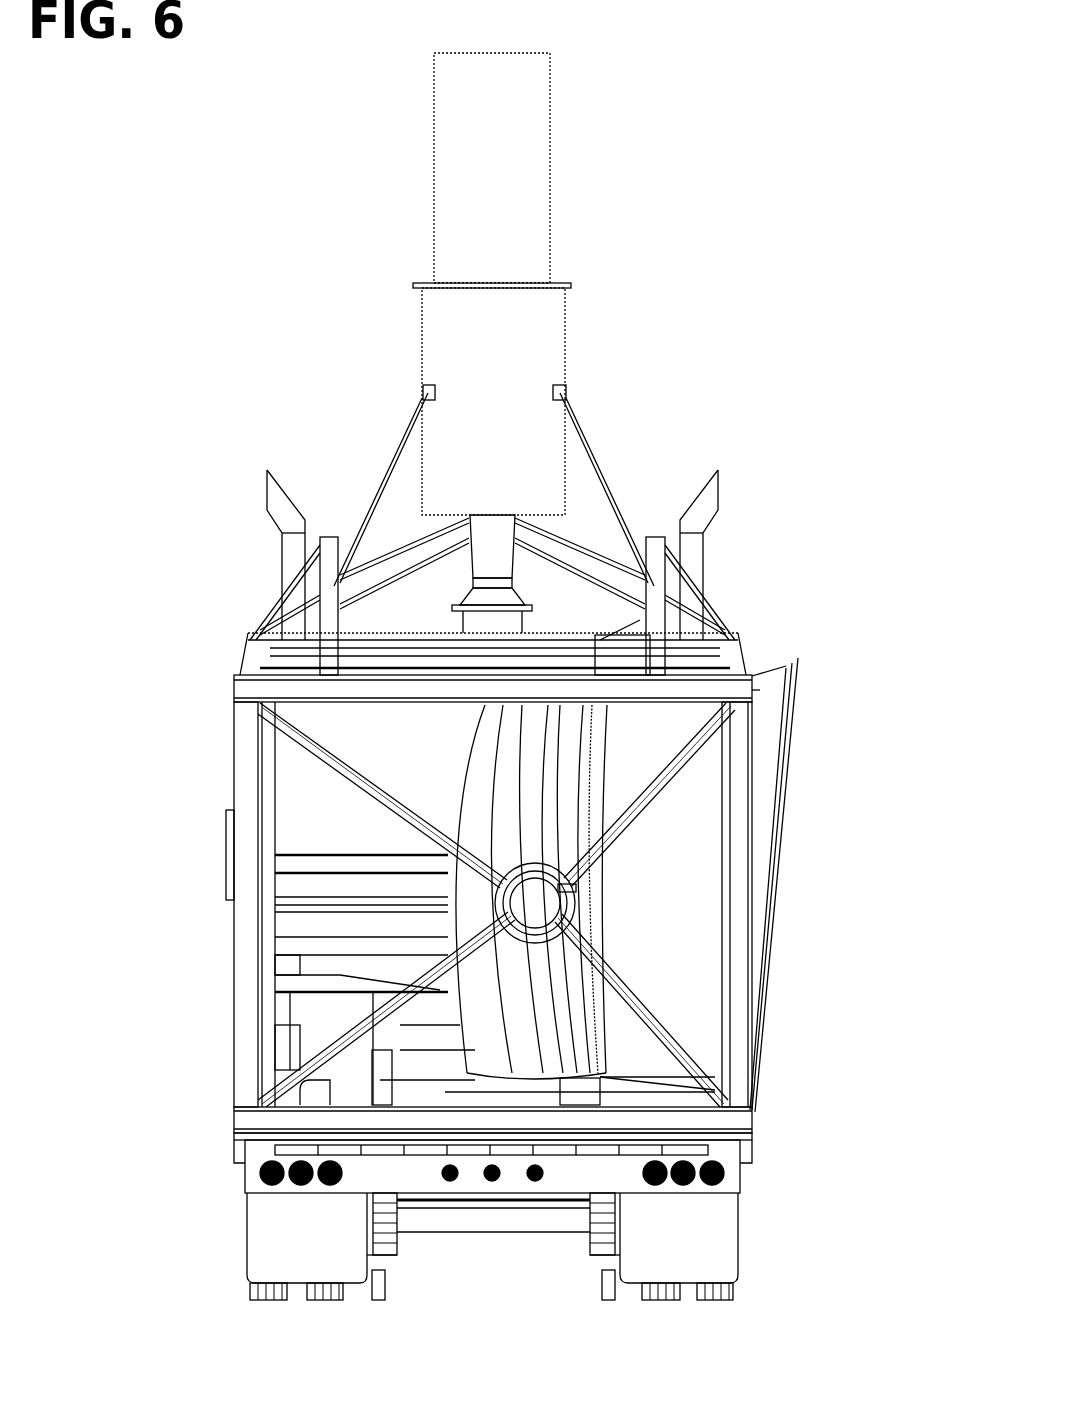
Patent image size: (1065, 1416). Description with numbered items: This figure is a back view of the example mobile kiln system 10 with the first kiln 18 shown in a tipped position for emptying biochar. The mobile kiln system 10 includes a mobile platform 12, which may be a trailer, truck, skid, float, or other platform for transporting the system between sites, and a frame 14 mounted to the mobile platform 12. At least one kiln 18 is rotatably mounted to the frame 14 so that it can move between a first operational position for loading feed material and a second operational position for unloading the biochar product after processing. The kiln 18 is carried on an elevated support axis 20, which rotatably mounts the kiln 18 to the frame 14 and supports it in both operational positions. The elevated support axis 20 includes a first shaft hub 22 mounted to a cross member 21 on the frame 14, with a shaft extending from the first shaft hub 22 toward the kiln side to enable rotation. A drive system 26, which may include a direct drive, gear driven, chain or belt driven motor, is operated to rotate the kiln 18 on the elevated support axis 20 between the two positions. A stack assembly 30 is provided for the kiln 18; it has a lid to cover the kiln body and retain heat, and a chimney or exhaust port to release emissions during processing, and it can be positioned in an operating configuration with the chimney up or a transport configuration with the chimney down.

The mobile kiln system 10 is at (252, 378).
The mobile platform 12 is at (242, 1160).
The frame 14 is at (234, 677).
The kiln 18 is at (783, 786).
The elevated support axis 20 is at (525, 899).
The cross member 21 is at (615, 835).
The first shaft hub 22 is at (563, 922).
The drive system 26 is at (578, 890).
The stack assembly 30 is at (415, 338).